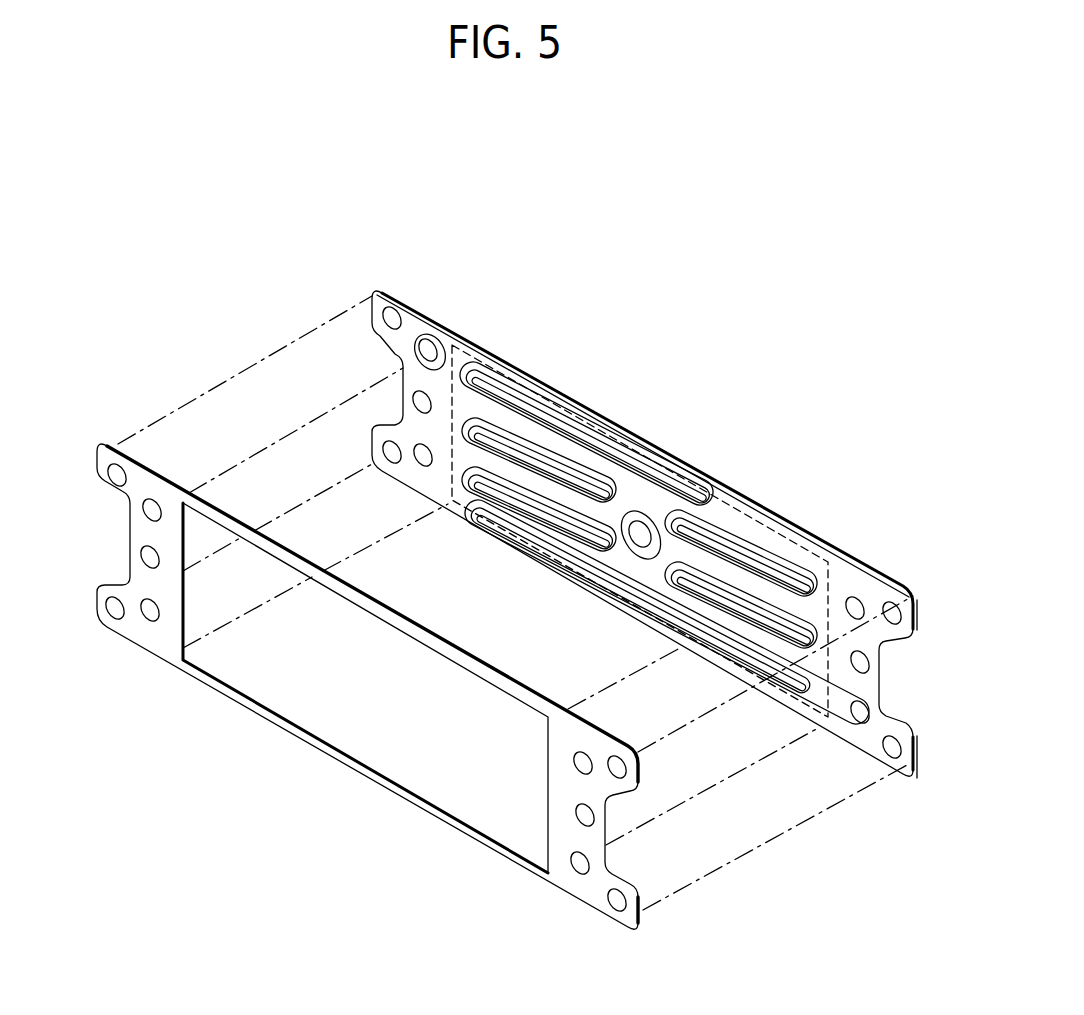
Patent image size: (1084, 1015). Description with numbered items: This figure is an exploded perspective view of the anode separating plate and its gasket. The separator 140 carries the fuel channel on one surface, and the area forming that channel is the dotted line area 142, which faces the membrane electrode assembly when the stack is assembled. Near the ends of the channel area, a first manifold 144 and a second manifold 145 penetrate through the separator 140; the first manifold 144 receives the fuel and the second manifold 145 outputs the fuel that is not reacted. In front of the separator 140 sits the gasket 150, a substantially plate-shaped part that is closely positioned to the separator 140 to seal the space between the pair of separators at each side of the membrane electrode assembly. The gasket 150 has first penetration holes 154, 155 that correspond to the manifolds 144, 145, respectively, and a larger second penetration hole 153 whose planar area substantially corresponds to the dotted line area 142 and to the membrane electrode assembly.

The separator 140 is at (526, 354).
The dotted line area 142 is at (697, 487).
The first manifold 144 is at (426, 348).
The second manifold 145 is at (858, 713).
The gasket 150 is at (179, 476).
The second penetration hole 153 is at (335, 718).
The first penetration hole 154 is at (117, 478).
The first penetration hole 155 is at (580, 866).